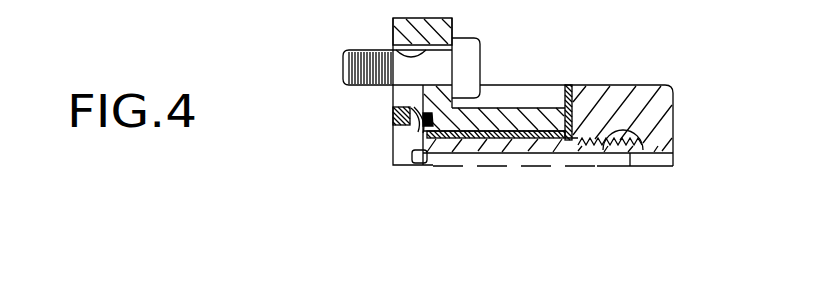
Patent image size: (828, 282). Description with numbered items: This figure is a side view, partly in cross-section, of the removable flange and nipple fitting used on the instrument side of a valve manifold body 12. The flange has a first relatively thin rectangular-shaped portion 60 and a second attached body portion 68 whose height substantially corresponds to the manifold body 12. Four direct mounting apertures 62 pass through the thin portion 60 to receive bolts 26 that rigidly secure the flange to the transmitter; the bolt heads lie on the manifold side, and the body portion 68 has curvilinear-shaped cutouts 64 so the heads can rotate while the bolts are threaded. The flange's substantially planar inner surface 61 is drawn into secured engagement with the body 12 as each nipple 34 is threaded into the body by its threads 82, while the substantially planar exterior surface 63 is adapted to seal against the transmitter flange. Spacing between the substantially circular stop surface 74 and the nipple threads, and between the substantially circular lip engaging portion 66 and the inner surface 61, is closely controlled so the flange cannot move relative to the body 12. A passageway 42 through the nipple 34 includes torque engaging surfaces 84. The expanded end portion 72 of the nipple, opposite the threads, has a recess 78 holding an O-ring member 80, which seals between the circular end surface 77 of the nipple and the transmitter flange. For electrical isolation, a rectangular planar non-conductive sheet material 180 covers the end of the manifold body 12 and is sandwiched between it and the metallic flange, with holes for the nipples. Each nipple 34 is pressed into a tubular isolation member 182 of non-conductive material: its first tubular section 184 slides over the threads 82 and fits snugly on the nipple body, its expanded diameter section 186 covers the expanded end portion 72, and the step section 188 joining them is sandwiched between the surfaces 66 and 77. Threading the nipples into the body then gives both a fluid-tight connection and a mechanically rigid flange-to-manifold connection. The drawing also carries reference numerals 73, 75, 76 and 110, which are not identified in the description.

The manifold body 12 is at (647, 116).
The bolts 26 is at (357, 59).
The nipple 34 is at (523, 148).
The passageway 42 is at (590, 162).
The first relatively thin rectangular-shaped portion 60 is at (422, 32).
The substantially planar inner surface 61 is at (645, 86).
The direct mounting apertures 62 is at (396, 51).
The substantially planar exterior surface 63 is at (393, 20).
The curvilinear-shaped cutouts 64 is at (492, 94).
The substantially circular lip engaging portion 66 is at (442, 137).
The second attached body portion 68 is at (503, 132).
The expanded end portion 72 is at (427, 118).
The rod shoulder 73 is at (343, 78).
The substantially circular stop surface 74 is at (457, 157).
The bracket 75 is at (418, 135).
The clamp member 76 is at (397, 138).
The circular end surface 77 is at (412, 112).
The recess 78 is at (395, 117).
The O-ring member 80 is at (398, 137).
The threads 82 is at (632, 142).
The torque engaging surfaces 84 is at (420, 164).
The reference (partially visible) 110 is at (138, 278).
The non-conductive sheet material 180 is at (575, 118).
The tubular isolation members 182 is at (572, 86).
The first tubular section 184 is at (577, 165).
The expanded diameter section 186 is at (400, 108).
The step section 188 is at (490, 93).